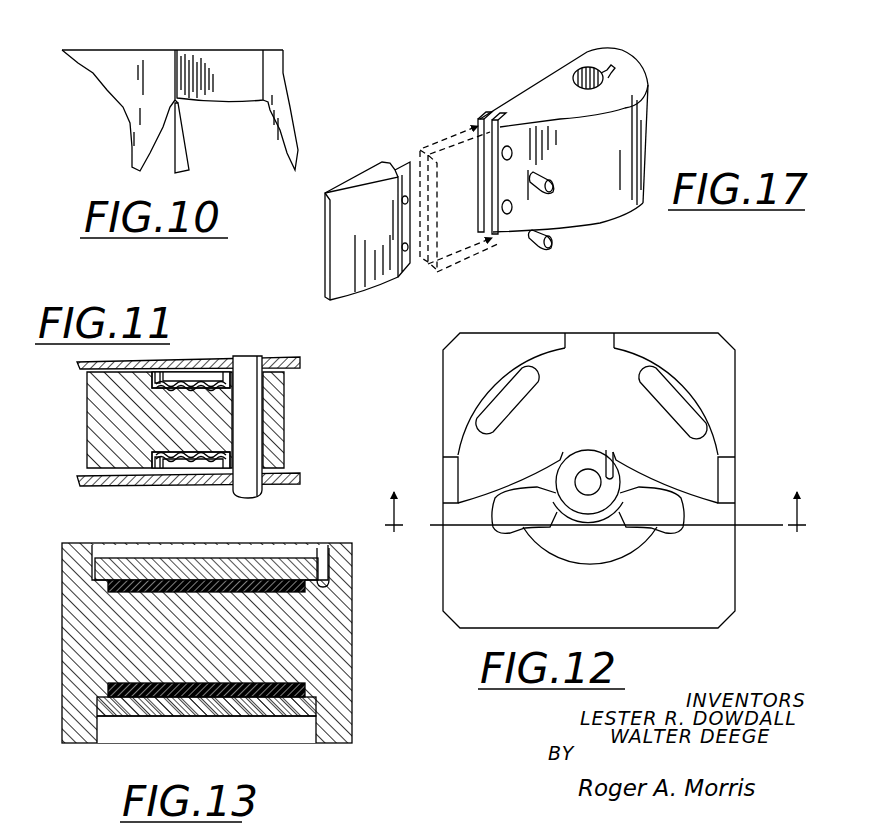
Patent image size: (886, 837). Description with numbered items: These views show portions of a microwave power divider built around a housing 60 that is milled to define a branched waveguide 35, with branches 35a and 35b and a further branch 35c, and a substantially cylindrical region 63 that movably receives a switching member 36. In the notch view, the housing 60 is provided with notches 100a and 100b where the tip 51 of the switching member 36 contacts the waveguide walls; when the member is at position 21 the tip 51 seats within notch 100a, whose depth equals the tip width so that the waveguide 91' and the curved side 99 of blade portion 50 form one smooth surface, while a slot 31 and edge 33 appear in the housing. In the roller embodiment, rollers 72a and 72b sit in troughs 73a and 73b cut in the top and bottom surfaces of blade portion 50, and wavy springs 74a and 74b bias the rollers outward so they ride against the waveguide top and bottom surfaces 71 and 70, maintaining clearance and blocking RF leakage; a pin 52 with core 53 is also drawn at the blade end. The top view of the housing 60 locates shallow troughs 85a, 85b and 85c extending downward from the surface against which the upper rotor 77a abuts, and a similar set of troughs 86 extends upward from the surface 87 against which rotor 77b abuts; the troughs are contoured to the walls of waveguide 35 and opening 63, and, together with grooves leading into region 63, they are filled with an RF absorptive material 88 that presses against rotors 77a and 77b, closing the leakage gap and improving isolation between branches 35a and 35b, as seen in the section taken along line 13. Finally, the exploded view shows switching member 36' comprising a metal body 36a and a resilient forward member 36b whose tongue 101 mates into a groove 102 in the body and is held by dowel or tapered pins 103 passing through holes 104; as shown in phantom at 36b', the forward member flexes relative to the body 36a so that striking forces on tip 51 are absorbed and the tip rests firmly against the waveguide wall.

In FIG. 10, the housing 60 is at (117, 60).
In FIG. 13, the housing 60 is at (62, 578).
In FIG. 12, the housing 60 is at (589, 480).
In FIG. 10, the waveguide 91' is at (213, 42).
In FIG. 10, the position 21 is at (240, 68).
In FIG. 10, the slot 31 is at (262, 62).
In FIG. 12, the slot 31 is at (580, 340).
In FIG. 10, the notch 100a is at (133, 143).
In FIG. 10, the notch 100b is at (280, 103).
In FIG. 10, the tip 51 is at (163, 76).
In FIG. 11, the tip 51 is at (87, 432).
In FIG. 10, the curved side 99 is at (185, 147).
In FIG. 10, the blade portion 50 is at (176, 176).
In FIG. 11, the blade portion 50 is at (123, 450).
In FIG. 17, the switching member 36' is at (495, 47).
In FIG. 17, the body 36a is at (598, 143).
In FIG. 17, the forward member 36b is at (367, 231).
In FIG. 17, the forward member (flexed position) 36b' is at (474, 217).
In FIG. 17, the tongue 101 is at (405, 163).
In FIG. 17, the groove 102 is at (478, 122).
In FIG. 17, the dowel or tapered pins 103 is at (552, 190).
In FIG. 17, the holes 104 is at (510, 148).
In FIG. 11, the top surface 71 is at (85, 365).
In FIG. 11, the bottom surface 70 is at (85, 478).
In FIG. 11, the branched waveguide 35 is at (37, 412).
In FIG. 11, the roller 72a is at (233, 377).
In FIG. 11, the roller 72b is at (218, 472).
In FIG. 11, the wavy spring 74a is at (165, 378).
In FIG. 11, the wavy spring 74b is at (165, 468).
In FIG. 11, the pin 52 is at (245, 368).
In FIG. 11, the pin core 53 is at (262, 365).
In FIG. 11, the switching member 36 is at (321, 420).
In FIG. 11, the trough 73a is at (290, 382).
In FIG. 11, the trough 73b is at (217, 443).
In FIG. 13, the upper rotor 77a is at (172, 560).
In FIG. 13, the rotor 77b is at (210, 713).
In FIG. 13, the shallow trough 85a is at (322, 556).
In FIG. 12, the shallow trough 85a is at (612, 546).
In FIG. 12, the shallow trough 85b is at (505, 398).
In FIG. 12, the shallow trough 85c is at (652, 385).
In FIG. 13, the RF absorptive material 88 is at (118, 582).
In FIG. 13, the shallow troughs 86 is at (305, 690).
In FIG. 12, the waveguide branch 35a is at (503, 477).
In FIG. 12, the waveguide branch 35b is at (674, 477).
In FIG. 12, the top segment 35c is at (588, 401).
In FIG. 12, the side edge 33 is at (443, 483).
In FIG. 12, the surface 87 is at (588, 468).
In FIG. 12, the cylindrical region 63 is at (611, 460).
In FIG. 12, the section line 13 is at (597, 531).